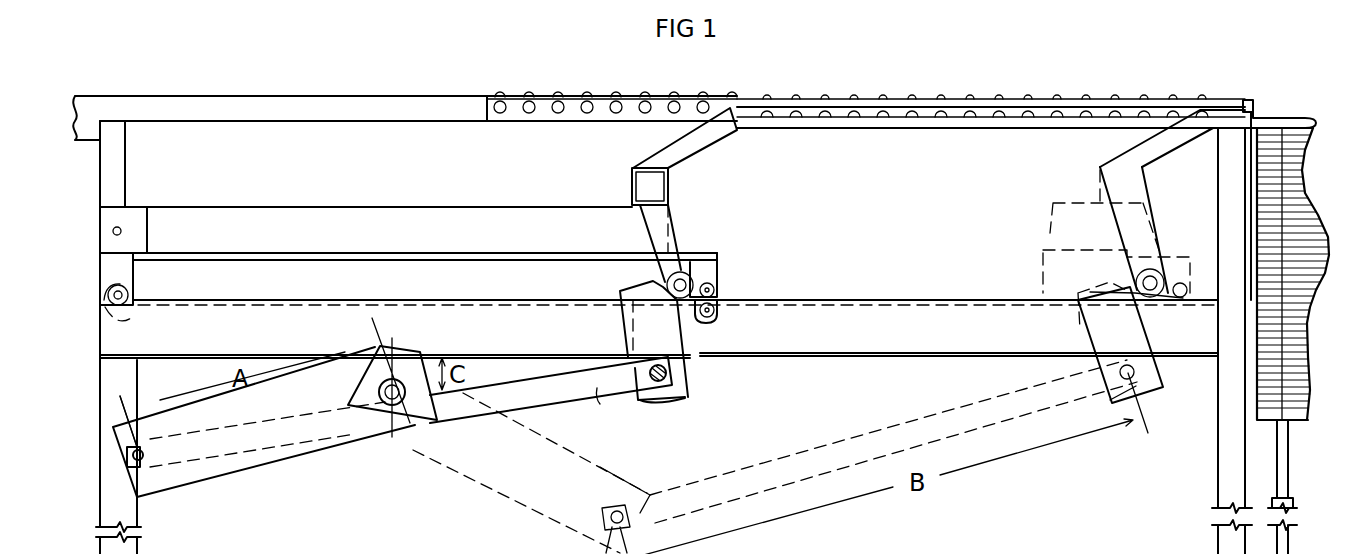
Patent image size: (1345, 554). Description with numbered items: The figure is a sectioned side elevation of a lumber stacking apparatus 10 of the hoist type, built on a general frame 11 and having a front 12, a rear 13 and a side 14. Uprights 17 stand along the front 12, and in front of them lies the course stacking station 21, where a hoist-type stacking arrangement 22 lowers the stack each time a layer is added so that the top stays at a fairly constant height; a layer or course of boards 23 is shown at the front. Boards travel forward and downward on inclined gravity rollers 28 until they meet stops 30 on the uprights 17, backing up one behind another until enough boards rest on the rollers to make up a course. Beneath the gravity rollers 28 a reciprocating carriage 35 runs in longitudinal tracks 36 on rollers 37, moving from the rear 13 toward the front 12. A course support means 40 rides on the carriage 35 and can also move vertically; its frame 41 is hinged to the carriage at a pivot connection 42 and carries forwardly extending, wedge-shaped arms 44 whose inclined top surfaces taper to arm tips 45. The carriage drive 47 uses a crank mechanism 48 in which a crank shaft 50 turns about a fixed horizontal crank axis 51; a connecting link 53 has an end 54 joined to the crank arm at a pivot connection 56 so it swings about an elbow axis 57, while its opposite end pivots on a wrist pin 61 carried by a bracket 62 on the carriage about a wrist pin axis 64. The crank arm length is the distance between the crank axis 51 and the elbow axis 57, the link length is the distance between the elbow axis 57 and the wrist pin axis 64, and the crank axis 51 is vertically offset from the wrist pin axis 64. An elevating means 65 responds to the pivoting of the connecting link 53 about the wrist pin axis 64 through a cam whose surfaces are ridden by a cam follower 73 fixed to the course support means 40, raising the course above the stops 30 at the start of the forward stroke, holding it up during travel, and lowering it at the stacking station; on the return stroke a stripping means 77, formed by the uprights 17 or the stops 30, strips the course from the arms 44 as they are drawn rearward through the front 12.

The lumber stacking apparatus 10 is at (589, 88).
The general frame 11 is at (189, 368).
The front 12 is at (1217, 418).
The rear 13 is at (113, 373).
The side 14 is at (118, 408).
The uprights 17 is at (1218, 482).
The course stacking station 21 is at (1300, 143).
The hoist-type stacking arrangement 22 is at (1290, 486).
The course of boards 23 is at (1262, 125).
The inclined gravity rollers 28 is at (997, 105).
The stops 30 is at (1249, 100).
The reciprocating carriage 35 is at (91, 276).
The longitudinal tracks 36 is at (280, 300).
The rollers 37 is at (98, 303).
The course support means 40 is at (787, 100).
The frame 41 is at (670, 186).
The pivot connection 42 is at (121, 231).
The arms 44 is at (1083, 108).
The arm tips 45 is at (1218, 140).
The carriage drive 47 is at (545, 410).
The crank mechanism 48 is at (246, 482).
The crank shaft 50 is at (405, 400).
The crank axis 51 is at (348, 402).
The connecting link 53 is at (614, 408).
The end 54 is at (140, 468).
The pivot connection 56 is at (145, 455).
The elbow axis 57 is at (146, 445).
The pivot pin 61 is at (692, 370).
The bracket 62 is at (700, 327).
The wrist pin axis 64 is at (685, 398).
The elevating means 65 is at (633, 287).
The cam follower 73 is at (683, 270).
The stripping means 77 is at (1238, 96).